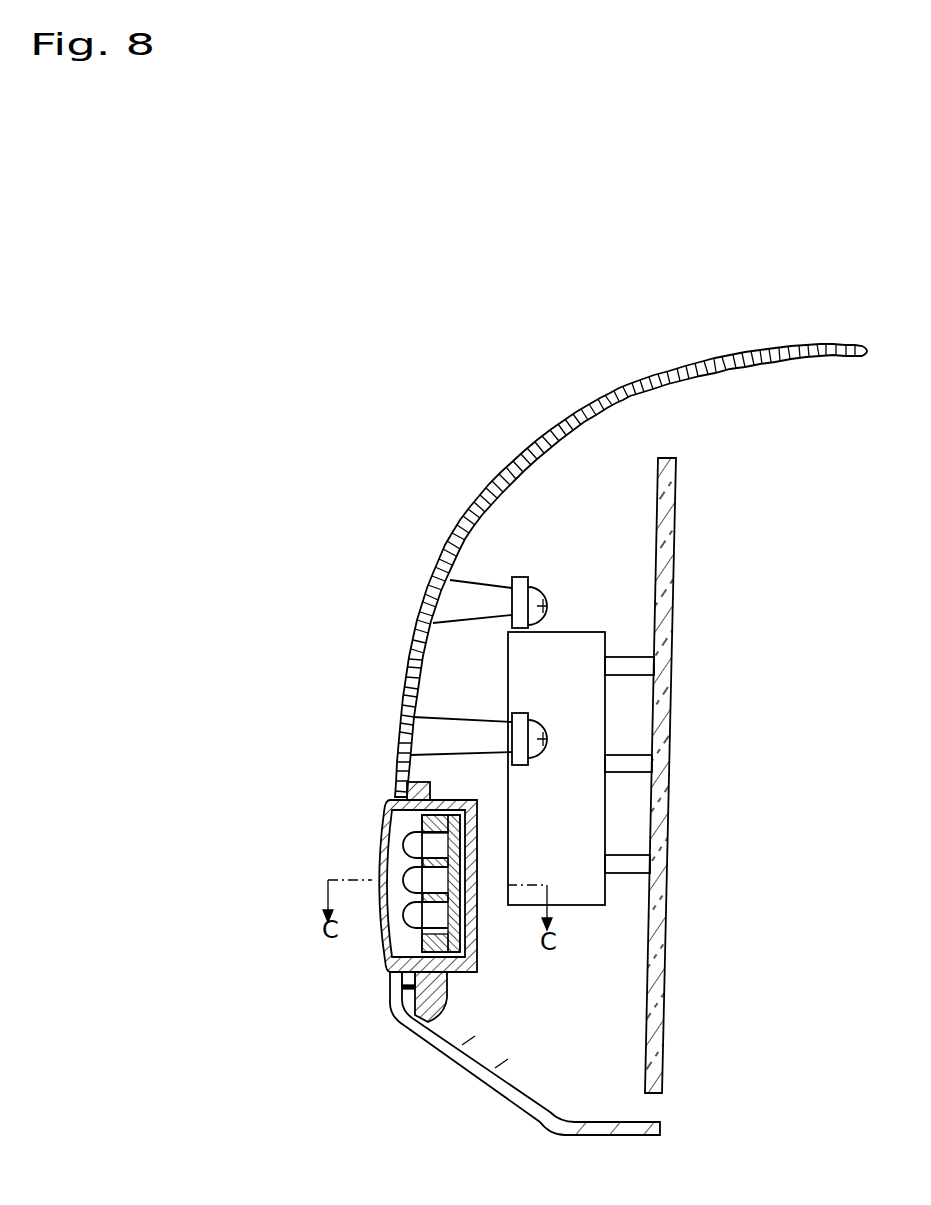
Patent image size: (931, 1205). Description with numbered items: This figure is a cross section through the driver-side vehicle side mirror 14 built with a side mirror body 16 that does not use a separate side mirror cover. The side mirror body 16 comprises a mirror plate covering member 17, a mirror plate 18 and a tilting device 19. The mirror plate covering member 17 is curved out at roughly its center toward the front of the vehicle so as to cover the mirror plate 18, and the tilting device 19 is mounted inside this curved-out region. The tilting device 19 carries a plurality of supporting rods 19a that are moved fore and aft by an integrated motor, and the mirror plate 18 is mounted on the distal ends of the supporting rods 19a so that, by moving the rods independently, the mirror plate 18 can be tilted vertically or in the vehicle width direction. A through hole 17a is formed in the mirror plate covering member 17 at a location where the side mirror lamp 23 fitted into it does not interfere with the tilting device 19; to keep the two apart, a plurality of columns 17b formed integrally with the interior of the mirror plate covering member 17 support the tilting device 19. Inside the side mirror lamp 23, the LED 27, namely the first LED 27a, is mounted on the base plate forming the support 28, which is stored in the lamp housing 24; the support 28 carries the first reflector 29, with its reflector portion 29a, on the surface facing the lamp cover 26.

The vehicle side mirror 14 is at (258, 449).
The side mirror body 16 is at (787, 482).
The mirror plate covering member 17 is at (758, 364).
The through hole 17a is at (388, 802).
The columns 17b is at (478, 582).
The mirror plate 18 is at (673, 557).
The tilting device 19 is at (607, 695).
The supporting rods 19a is at (633, 653).
The side mirror lamp 23 is at (486, 946).
The lamp housing 24 is at (438, 1027).
The lamp cover 26 is at (385, 925).
The contact holder 27 is at (402, 898).
The first LED 27a is at (382, 945).
The support 28 is at (470, 940).
The first reflector 29 is at (408, 1027).
The holder top portion 29a is at (423, 830).